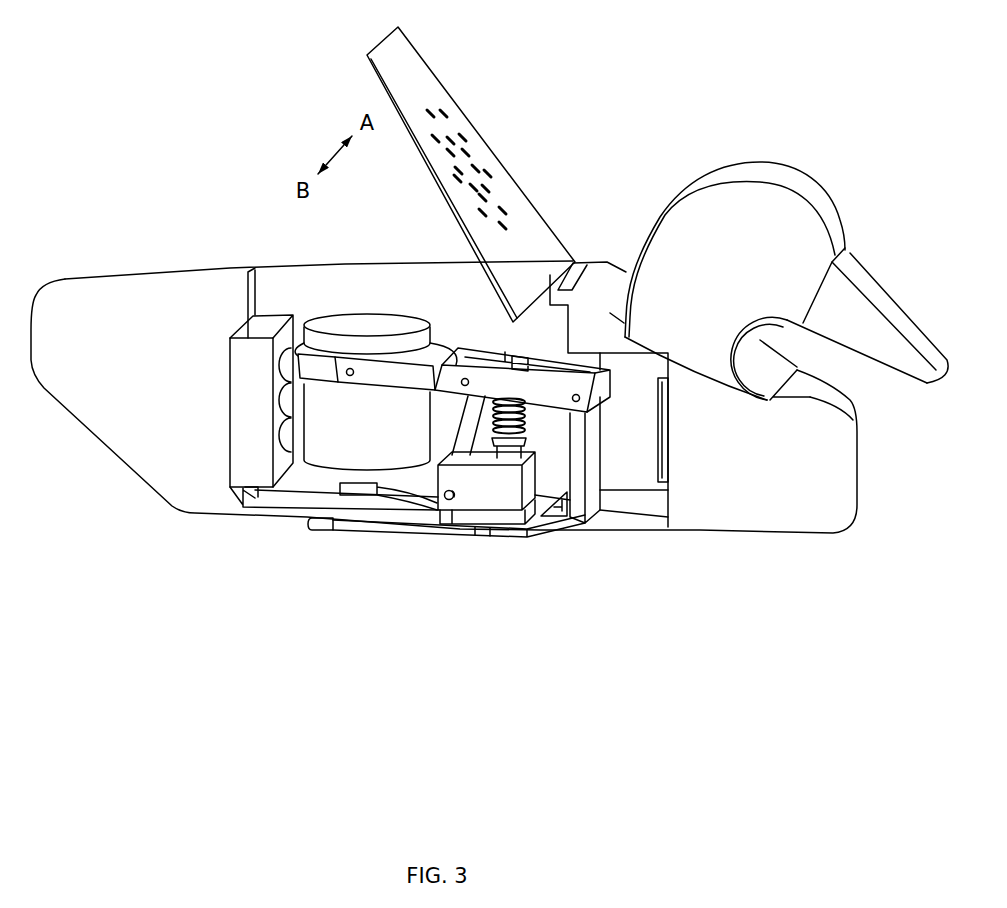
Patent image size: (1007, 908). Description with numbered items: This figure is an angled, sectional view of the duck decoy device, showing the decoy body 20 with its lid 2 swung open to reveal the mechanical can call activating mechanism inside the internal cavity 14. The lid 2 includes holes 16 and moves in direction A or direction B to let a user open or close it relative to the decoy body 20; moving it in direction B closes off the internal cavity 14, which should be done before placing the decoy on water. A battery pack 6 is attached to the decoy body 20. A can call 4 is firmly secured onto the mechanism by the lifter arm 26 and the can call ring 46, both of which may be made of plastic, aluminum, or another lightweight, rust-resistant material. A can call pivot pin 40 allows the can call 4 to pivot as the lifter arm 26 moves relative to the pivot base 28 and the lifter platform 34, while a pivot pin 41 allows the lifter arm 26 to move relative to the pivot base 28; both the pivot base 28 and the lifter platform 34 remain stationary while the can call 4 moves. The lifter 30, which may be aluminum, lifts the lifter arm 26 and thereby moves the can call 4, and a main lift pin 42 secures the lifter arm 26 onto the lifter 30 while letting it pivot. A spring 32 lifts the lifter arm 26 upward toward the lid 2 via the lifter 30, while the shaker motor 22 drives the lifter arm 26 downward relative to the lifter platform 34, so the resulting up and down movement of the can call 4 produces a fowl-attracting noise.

The lid 2 is at (471, 174).
The can call 4 is at (376, 412).
The battery pack 6 is at (261, 406).
The internal cavity 14 is at (398, 288).
The holes 16 is at (444, 106).
The decoy body 20 is at (86, 604).
The shaker motor 22 is at (486, 488).
The lifter arm 26 is at (472, 380).
The pivot base 28 is at (590, 452).
The lifter 30 is at (463, 402).
The spring 32 is at (519, 428).
The lifter platform 34 is at (324, 527).
The can call pivot pin 40 is at (350, 368).
The pivot pin 41 is at (580, 393).
The main lift pin 42 is at (505, 362).
The can call ring 46 is at (310, 354).